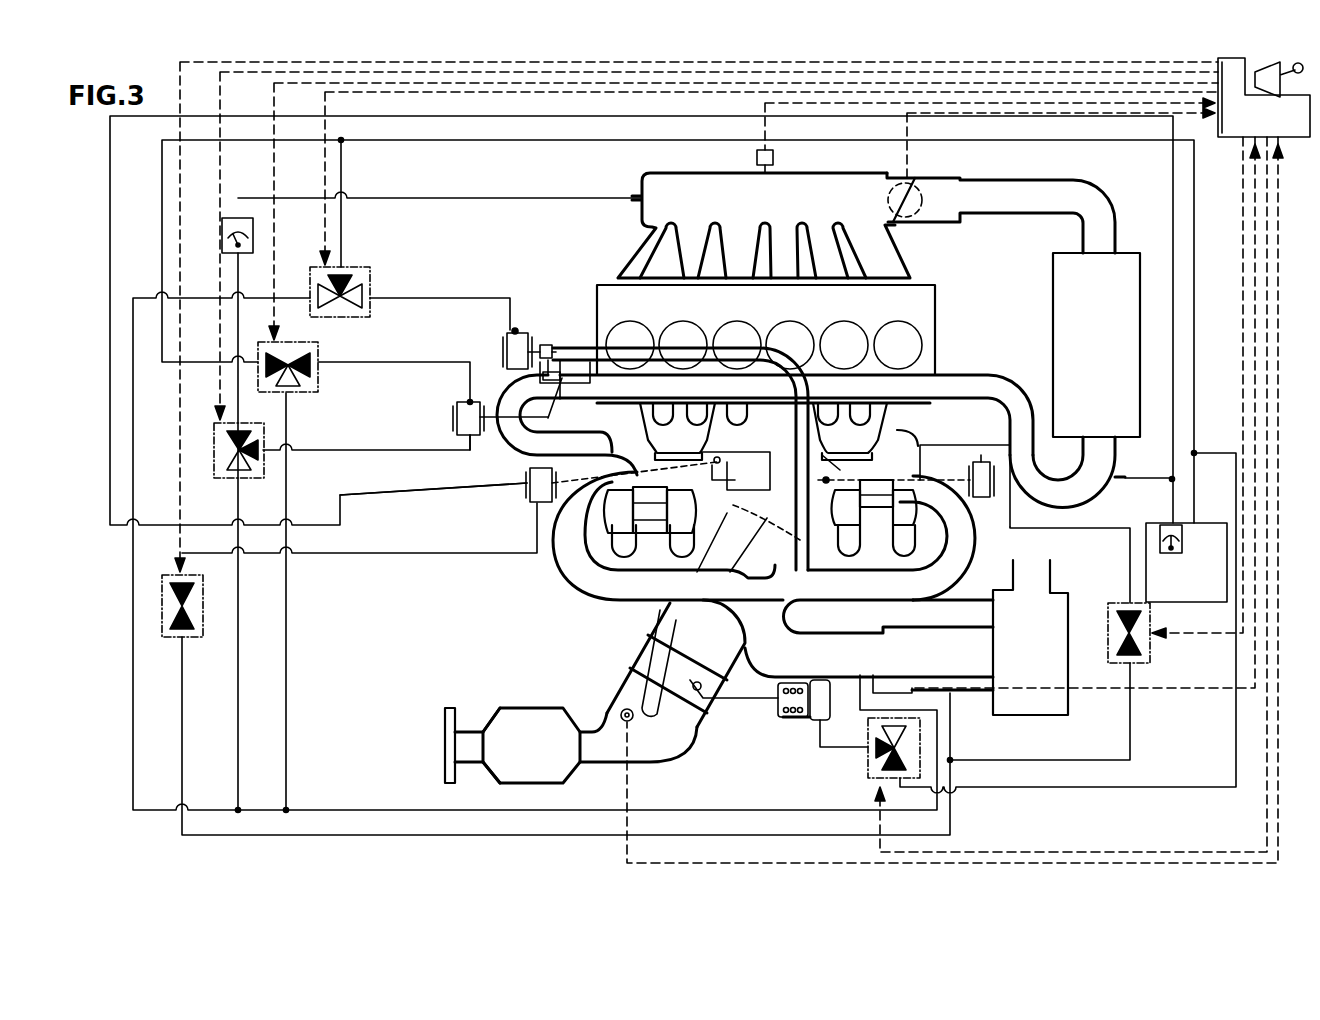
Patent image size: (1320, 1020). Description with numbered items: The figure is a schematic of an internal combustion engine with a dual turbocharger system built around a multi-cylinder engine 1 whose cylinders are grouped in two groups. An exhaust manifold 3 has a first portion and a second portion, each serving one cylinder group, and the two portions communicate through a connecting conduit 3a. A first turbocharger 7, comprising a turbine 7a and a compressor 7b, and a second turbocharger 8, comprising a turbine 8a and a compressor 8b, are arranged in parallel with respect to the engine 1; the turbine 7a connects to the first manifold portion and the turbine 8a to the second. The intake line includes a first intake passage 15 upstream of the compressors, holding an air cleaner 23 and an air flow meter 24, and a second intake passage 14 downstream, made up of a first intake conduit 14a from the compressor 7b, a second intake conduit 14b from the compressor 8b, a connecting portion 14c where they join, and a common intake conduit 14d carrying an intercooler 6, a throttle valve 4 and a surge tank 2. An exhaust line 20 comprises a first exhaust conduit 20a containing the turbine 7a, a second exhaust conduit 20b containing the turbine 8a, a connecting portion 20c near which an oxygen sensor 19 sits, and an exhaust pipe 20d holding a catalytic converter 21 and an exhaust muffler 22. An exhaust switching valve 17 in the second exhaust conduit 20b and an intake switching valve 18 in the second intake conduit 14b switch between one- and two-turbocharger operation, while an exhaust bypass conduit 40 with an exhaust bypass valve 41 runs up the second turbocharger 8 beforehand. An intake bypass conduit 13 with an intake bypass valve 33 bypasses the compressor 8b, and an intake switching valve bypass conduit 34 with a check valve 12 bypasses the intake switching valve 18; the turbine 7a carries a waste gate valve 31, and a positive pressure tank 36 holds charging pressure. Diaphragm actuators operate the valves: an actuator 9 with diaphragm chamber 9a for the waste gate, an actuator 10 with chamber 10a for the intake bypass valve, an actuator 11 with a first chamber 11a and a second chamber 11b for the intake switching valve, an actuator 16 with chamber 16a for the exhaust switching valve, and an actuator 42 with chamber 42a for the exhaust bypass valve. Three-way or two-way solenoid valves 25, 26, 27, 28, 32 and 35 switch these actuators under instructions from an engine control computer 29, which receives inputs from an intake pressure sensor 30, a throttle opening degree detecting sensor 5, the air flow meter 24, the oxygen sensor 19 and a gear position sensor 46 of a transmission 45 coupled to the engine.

The multi-cylinder engine 1 is at (935, 316).
The surge tank 2 is at (713, 173).
The exhaust manifold 3 is at (893, 431).
The connecting conduit 3a is at (776, 408).
The throttle valve 4 is at (899, 220).
The throttle opening degree detecting sensor 5 is at (918, 183).
The intercooler 6 is at (1053, 302).
The first turbocharger 7 is at (874, 524).
The turbine 7a is at (847, 528).
The compressor 7b is at (947, 545).
The second turbocharger 8 is at (650, 525).
The turbine 8a is at (657, 550).
The compressor 8b is at (587, 522).
The actuator 9 is at (970, 476).
The diaphragm chamber 9a is at (993, 486).
The actuator 10 is at (507, 352).
The diaphragm chamber 10a is at (513, 330).
The actuator 11 is at (457, 418).
The first chamber 11a is at (494, 451).
The second chamber 11b is at (469, 402).
The check valve 12 is at (585, 385).
The intake bypass conduit 13 is at (712, 343).
The second intake passage 14 is at (1116, 470).
The first intake conduit 14a is at (978, 376).
The second intake conduit 14b is at (543, 448).
The connecting portion 14c is at (1020, 376).
The common intake conduit 14d is at (1070, 184).
The first intake passage 15 is at (832, 660).
The actuator 16 is at (786, 718).
The diaphragm chamber 16a is at (813, 720).
The exhaust switching valve 17 is at (698, 692).
The intake switching valve 18 is at (558, 398).
The oxygen sensor 19 is at (619, 708).
The exhaust line 20 is at (682, 750).
The first exhaust conduit 20a is at (667, 622).
The second exhaust conduit 20b is at (864, 682).
The connecting portion 20c is at (642, 750).
The exhaust pipe 20d is at (475, 735).
The catalytic converter 21 is at (533, 773).
The exhaust muffler 22 is at (448, 708).
The air cleaner 23 is at (1068, 662).
The air flow meter 24 is at (915, 632).
The three-way solenoid valve 25 is at (318, 343).
The three-way solenoid valve 26 is at (228, 478).
The three-way solenoid valve 27 is at (365, 267).
The three-way solenoid valve 28 is at (868, 770).
The engine control computer 29 is at (1228, 137).
The intake pressure sensor 30 is at (773, 157).
The waste gate valve 31 is at (845, 457).
The two-way solenoid valve 32 is at (203, 634).
The intake bypass valve 33 is at (545, 345).
The intake switching valve bypass conduit 34 is at (577, 352).
The solenoid valve 35 is at (1150, 645).
The positive pressure tank 36 is at (1170, 602).
The exhaust bypass conduit 40 is at (740, 482).
The exhaust bypass valve 41 is at (736, 464).
The actuator 42 is at (532, 502).
The diaphragm chamber 42a is at (527, 486).
The transmission 45 is at (1240, 99).
The gear position sensor 46 is at (1279, 99).